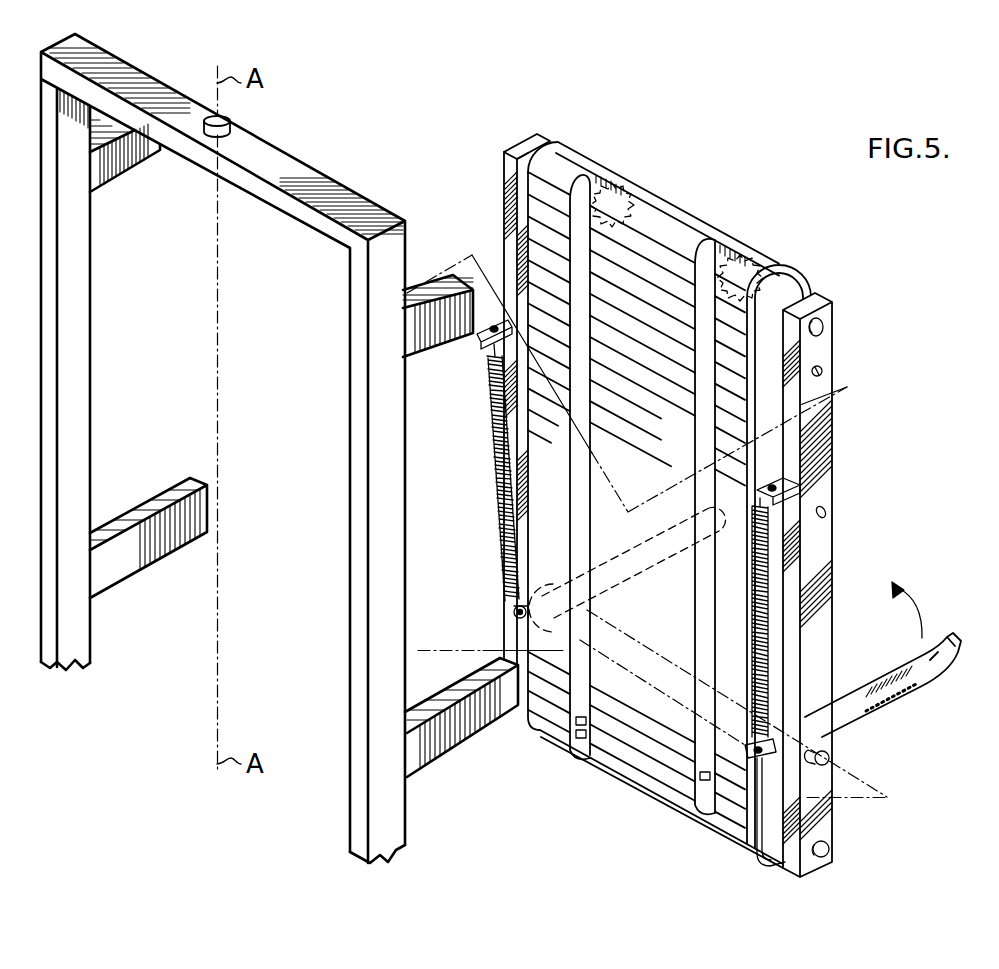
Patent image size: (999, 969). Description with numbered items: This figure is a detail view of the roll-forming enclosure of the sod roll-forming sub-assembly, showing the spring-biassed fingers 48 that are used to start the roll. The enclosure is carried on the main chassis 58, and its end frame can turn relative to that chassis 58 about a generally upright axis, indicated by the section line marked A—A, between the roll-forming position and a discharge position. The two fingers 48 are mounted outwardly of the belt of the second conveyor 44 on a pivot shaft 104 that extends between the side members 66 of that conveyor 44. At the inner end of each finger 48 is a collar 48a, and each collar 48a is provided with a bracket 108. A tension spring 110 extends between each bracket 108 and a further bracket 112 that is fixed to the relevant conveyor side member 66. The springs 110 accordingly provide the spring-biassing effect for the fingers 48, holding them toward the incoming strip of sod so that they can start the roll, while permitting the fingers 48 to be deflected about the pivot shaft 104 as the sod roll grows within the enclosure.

The second conveyor 44 is at (718, 221).
The finger 48 is at (928, 685).
The collar 48a is at (840, 740).
The chassis 58 is at (362, 187).
The side member 66 is at (503, 152).
The pivot shaft 104 is at (641, 700).
The bracket 108 is at (513, 607).
The tension spring 110 is at (497, 490).
The further bracket 112 is at (480, 337).